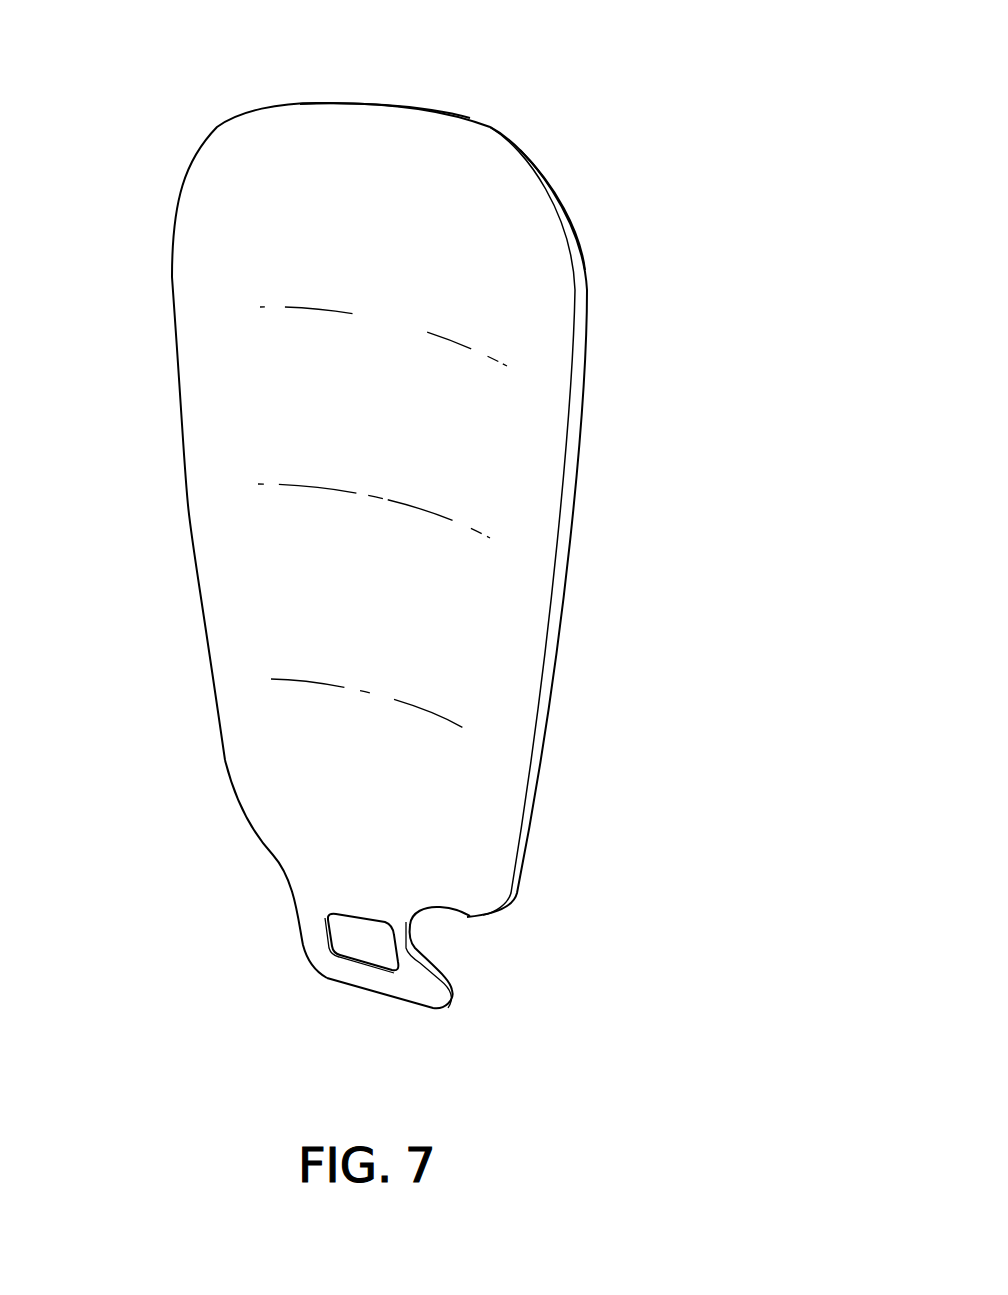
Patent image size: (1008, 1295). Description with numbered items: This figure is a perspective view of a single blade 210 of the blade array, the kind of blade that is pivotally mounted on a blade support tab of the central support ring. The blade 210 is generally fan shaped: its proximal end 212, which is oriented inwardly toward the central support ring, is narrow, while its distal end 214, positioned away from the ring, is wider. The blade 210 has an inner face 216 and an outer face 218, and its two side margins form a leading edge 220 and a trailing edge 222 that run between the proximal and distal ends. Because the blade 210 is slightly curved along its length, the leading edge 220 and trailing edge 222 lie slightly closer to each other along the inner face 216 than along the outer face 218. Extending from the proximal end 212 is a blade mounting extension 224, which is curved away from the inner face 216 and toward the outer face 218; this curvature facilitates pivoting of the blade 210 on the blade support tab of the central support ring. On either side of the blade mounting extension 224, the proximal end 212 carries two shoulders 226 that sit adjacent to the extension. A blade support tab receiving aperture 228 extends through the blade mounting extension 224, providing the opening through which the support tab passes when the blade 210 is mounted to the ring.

The blade 210 is at (257, 388).
The proximal end 212 is at (213, 820).
The distal end 214 is at (360, 135).
The inner face 216 is at (449, 400).
The outer face 218 is at (612, 224).
The leading edge 220 is at (197, 556).
The trailing edge 222 is at (560, 603).
The blade mounting extension 224 is at (408, 993).
The shoulder 226 is at (273, 855).
The blade support tab receiving aperture 228 is at (358, 940).